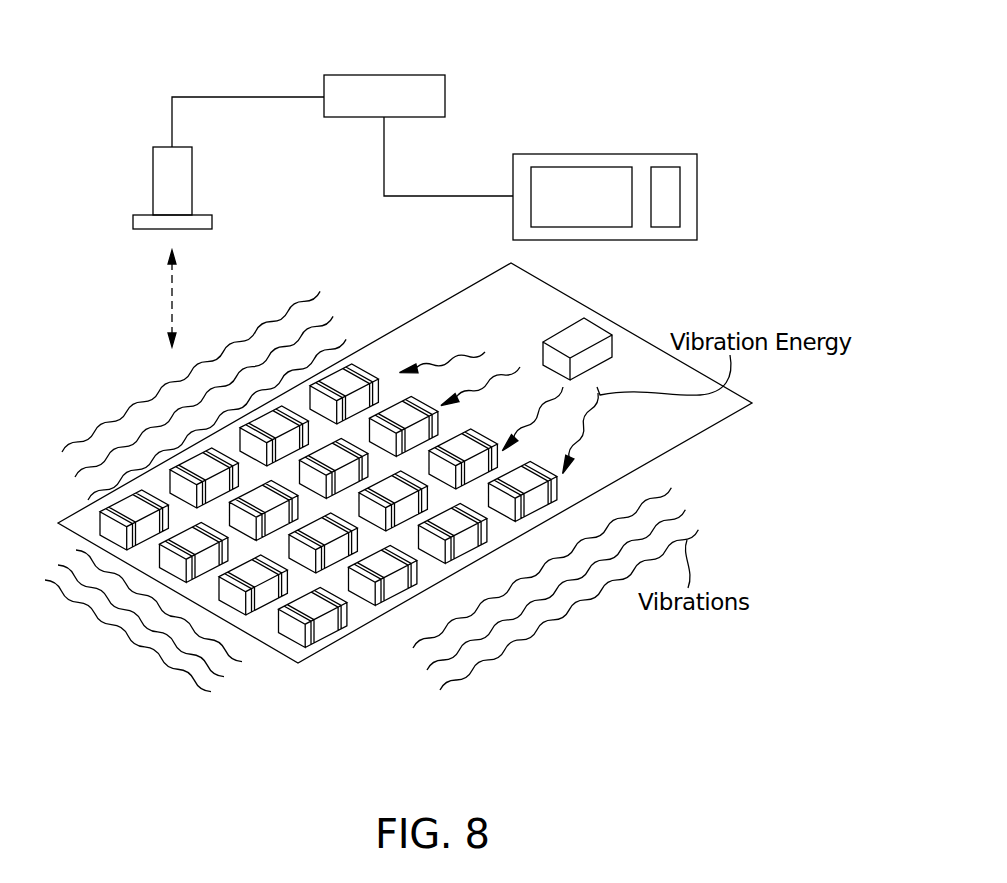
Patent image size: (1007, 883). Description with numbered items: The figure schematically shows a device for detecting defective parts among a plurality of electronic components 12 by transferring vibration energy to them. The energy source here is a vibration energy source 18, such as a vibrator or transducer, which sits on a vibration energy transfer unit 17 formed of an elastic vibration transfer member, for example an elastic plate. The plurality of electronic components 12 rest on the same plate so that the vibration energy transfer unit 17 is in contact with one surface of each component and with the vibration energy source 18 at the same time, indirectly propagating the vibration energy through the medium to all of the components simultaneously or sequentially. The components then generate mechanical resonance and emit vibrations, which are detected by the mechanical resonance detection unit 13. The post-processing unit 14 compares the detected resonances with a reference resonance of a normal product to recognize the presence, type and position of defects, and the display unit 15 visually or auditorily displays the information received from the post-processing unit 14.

The plurality of electronic components 12 is at (325, 623).
The mechanical resonance detection unit 13 is at (192, 180).
The post-processing unit 14 is at (421, 75).
The display unit 15 is at (662, 154).
The vibration energy transfer unit 17 is at (260, 623).
The vibration energy source 18 is at (590, 332).